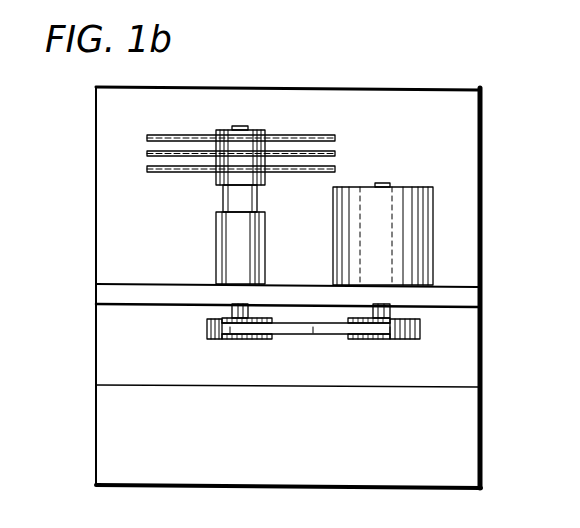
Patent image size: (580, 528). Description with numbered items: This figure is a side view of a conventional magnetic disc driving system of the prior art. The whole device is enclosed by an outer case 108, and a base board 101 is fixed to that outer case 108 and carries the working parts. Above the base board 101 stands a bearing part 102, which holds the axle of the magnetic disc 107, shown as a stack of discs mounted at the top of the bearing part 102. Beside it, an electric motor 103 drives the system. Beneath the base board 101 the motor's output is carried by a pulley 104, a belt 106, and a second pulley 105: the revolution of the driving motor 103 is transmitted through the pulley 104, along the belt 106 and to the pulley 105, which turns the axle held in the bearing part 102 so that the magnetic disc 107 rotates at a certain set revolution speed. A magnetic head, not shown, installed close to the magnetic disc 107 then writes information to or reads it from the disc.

The base board 101 is at (452, 293).
The bearing part 102 is at (233, 245).
The electric motor 103 is at (408, 219).
The pulley 104 is at (384, 344).
The pulley 105 is at (224, 342).
The belt 106 is at (313, 334).
The magnetic disc 107 is at (172, 136).
The outer case 108 is at (484, 113).